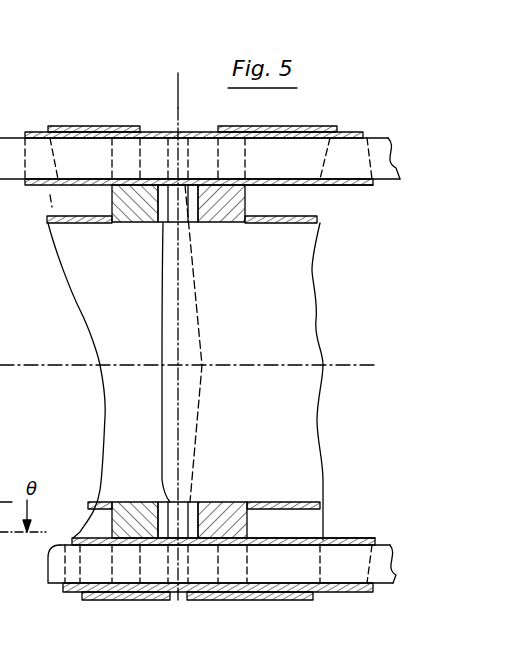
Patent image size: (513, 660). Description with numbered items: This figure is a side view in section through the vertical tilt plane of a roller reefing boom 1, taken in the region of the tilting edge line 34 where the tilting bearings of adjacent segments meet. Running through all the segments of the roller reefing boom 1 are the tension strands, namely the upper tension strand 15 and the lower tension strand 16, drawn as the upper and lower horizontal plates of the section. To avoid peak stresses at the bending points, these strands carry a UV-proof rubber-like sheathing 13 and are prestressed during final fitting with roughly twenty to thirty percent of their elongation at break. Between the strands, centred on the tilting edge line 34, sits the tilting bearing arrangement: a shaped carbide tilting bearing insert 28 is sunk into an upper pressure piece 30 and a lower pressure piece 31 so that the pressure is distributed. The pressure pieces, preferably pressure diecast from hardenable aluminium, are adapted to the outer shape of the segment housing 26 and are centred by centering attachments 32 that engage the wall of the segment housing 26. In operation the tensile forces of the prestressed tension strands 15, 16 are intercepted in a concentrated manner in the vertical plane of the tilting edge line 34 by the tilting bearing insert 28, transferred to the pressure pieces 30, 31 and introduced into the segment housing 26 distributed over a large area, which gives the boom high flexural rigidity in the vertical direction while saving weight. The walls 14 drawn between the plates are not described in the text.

The roller reefing boom 1 is at (73, 103).
The rubber-like sheathing 13 is at (345, 186).
The tubular membrane wall 14 is at (110, 342).
The upper tension strand 15 is at (387, 143).
The lower tension strand 16 is at (393, 545).
The segment housing 26 is at (263, 502).
The tilting bearing insert 28 is at (167, 218).
The upper pressure piece 30 is at (203, 225).
The lower pressure piece 31 is at (205, 500).
The centering attachment 32 is at (232, 218).
The tilting edge line 34 is at (175, 82).